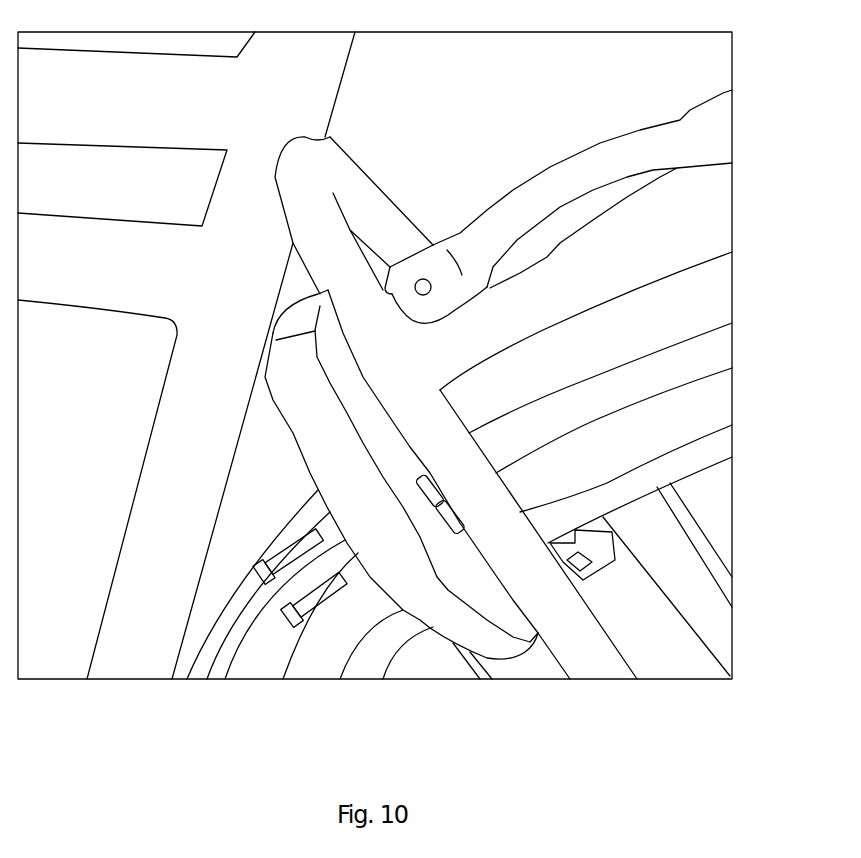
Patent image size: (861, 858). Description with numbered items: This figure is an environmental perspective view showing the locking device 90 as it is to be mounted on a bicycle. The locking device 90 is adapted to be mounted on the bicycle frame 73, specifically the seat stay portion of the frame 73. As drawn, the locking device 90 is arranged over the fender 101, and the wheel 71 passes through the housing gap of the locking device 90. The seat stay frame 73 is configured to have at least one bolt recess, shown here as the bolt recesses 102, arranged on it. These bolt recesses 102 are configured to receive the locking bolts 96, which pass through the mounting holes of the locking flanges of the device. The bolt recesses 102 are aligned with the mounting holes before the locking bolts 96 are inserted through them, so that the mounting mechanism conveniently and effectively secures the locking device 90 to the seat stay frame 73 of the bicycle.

The bicycle frame 73 is at (360, 320).
The locking device 90 is at (299, 465).
The wheel 71 is at (613, 443).
The fender 101 is at (550, 347).
The bolt recesses 102 is at (432, 485).
The locking bolts 96 is at (262, 565).